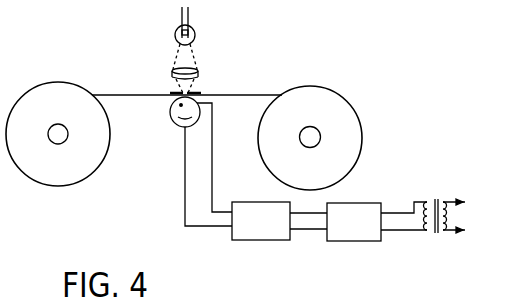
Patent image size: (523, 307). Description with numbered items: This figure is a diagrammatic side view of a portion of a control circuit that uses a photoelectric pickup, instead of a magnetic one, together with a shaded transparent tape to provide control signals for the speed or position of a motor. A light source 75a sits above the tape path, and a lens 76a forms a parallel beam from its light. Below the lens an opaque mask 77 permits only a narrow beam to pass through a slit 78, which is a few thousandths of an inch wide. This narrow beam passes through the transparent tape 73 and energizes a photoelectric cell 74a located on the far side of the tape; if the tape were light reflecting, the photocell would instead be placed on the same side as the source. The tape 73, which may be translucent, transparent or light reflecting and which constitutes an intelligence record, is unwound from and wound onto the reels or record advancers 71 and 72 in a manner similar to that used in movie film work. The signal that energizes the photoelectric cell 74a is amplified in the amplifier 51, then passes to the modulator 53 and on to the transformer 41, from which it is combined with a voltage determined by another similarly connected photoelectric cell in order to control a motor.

The reel 71 is at (84, 179).
The reel 72 is at (363, 152).
The transparent tape 73 is at (262, 93).
The photoelectric cell 74a is at (174, 121).
The light source 75a is at (197, 35).
The lens 76a is at (200, 71).
The opaque mask 77 is at (168, 92).
The slit 78 is at (202, 88).
The amplifier 51 is at (270, 247).
The modulator 53 is at (337, 246).
The transformer 41 is at (437, 236).